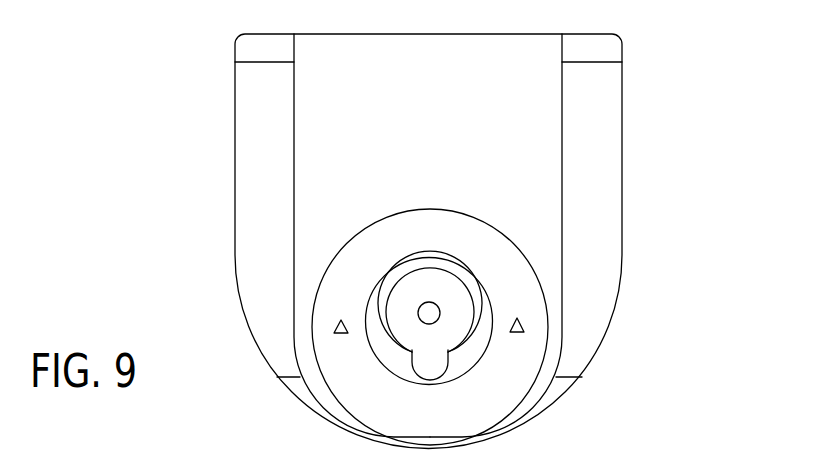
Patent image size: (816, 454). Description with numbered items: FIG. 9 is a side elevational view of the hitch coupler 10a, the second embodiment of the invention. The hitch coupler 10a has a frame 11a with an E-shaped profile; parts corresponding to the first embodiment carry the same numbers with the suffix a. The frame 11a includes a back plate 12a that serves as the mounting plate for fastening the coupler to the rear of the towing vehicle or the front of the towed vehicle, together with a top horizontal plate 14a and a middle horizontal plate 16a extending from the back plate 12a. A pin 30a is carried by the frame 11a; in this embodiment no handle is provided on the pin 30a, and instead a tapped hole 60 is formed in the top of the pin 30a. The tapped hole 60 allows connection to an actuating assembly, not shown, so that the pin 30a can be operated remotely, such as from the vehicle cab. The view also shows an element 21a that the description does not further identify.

The hitch coupler 10a is at (168, 266).
The frame 11a is at (597, 353).
The back plate 12a is at (600, 38).
The top horizontal plate 14a is at (538, 141).
The middle horizontal plate 16a is at (247, 148).
The rotatable camera body 21a is at (388, 366).
The pin 30a is at (453, 288).
The tapped hole 60 is at (440, 307).